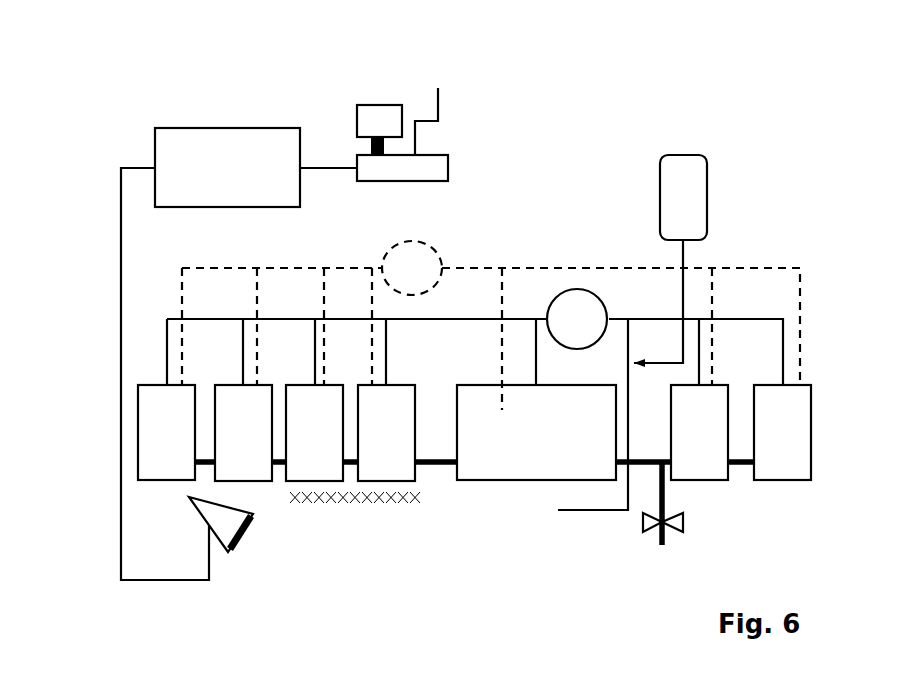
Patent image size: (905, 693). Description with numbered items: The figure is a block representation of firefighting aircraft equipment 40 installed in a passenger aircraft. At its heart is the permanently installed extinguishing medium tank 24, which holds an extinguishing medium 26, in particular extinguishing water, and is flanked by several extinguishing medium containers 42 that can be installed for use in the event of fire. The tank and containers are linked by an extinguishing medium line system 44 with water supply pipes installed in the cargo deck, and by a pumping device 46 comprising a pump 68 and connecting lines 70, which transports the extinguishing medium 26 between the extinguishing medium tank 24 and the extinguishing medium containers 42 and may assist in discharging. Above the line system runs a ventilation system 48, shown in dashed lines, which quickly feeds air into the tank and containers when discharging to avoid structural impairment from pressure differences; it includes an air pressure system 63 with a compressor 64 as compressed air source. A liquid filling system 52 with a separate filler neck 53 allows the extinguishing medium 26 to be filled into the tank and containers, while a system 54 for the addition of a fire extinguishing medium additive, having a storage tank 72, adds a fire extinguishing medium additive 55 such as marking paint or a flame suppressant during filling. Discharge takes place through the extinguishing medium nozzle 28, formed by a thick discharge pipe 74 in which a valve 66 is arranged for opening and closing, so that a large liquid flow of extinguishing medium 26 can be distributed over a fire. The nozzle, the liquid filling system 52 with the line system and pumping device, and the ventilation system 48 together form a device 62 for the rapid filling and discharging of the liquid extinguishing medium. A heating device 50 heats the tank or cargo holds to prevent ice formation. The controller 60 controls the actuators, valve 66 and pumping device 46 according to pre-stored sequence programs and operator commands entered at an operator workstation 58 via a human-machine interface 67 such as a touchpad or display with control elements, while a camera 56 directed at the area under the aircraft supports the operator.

The firefighting aircraft equipment 40 is at (170, 80).
The controller 60 is at (360, 262).
The operator workstation 58 is at (360, 78).
The human-machine interface 67 is at (380, 105).
The compressor 64 is at (430, 252).
The air pressure system 63 is at (455, 245).
The ventilation system 48 is at (460, 262).
The extinguishing medium line system 44 is at (445, 320).
The connecting lines 70 is at (543, 319).
The pumping device 46 is at (579, 287).
The pump 68 is at (603, 268).
The system for the addition of a fire extinguishing medium additive 54 is at (685, 152).
The fire extinguishing medium additive 55 is at (687, 197).
The storage tank 72 is at (709, 198).
The extinguishing medium container 42 is at (474, 433).
The extinguishing medium tank 24 is at (536, 432).
The heating device 50 is at (340, 505).
The camera 56 is at (229, 553).
The liquid filling system 52 is at (622, 512).
The filler neck 53 is at (560, 512).
The extinguishing medium 26 is at (545, 510).
The device for the rapid filling and discharging of a liquid extinguishing medium 62 is at (558, 605).
The thick discharge pipe 74 is at (665, 502).
The valve 66 is at (684, 522).
The extinguishing medium nozzle 28 is at (665, 543).